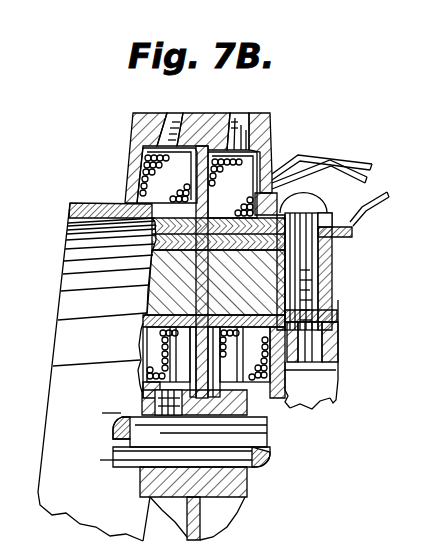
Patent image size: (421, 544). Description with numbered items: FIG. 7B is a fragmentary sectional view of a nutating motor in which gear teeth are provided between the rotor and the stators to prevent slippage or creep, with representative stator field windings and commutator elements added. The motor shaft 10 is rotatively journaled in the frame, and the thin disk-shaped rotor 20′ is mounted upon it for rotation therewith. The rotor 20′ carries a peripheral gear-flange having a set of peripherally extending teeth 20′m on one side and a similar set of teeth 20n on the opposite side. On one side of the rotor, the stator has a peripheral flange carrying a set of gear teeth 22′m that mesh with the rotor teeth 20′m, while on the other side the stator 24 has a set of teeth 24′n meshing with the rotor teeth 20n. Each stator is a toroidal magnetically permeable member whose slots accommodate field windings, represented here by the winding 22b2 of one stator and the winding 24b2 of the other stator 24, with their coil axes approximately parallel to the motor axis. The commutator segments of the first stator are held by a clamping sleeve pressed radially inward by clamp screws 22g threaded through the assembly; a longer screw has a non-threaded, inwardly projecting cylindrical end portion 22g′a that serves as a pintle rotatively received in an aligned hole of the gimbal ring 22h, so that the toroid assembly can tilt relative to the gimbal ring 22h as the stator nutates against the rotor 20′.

The motor shaft 10 is at (191, 465).
The stator 24 is at (128, 125).
The set of teeth 24′n is at (171, 114).
The field winding 24b2 is at (145, 177).
The set of peripherally extending teeth 20n is at (175, 114).
The rotor 20′ is at (205, 111).
The set of peripherally extending teeth 20′m is at (242, 114).
The set of gear teeth 22′m is at (262, 120).
The field winding 22b2 is at (300, 160).
The clamp screw 22g is at (306, 194).
The cylindrical end portion 22g′a is at (322, 352).
The gimbal ring 22h is at (318, 400).